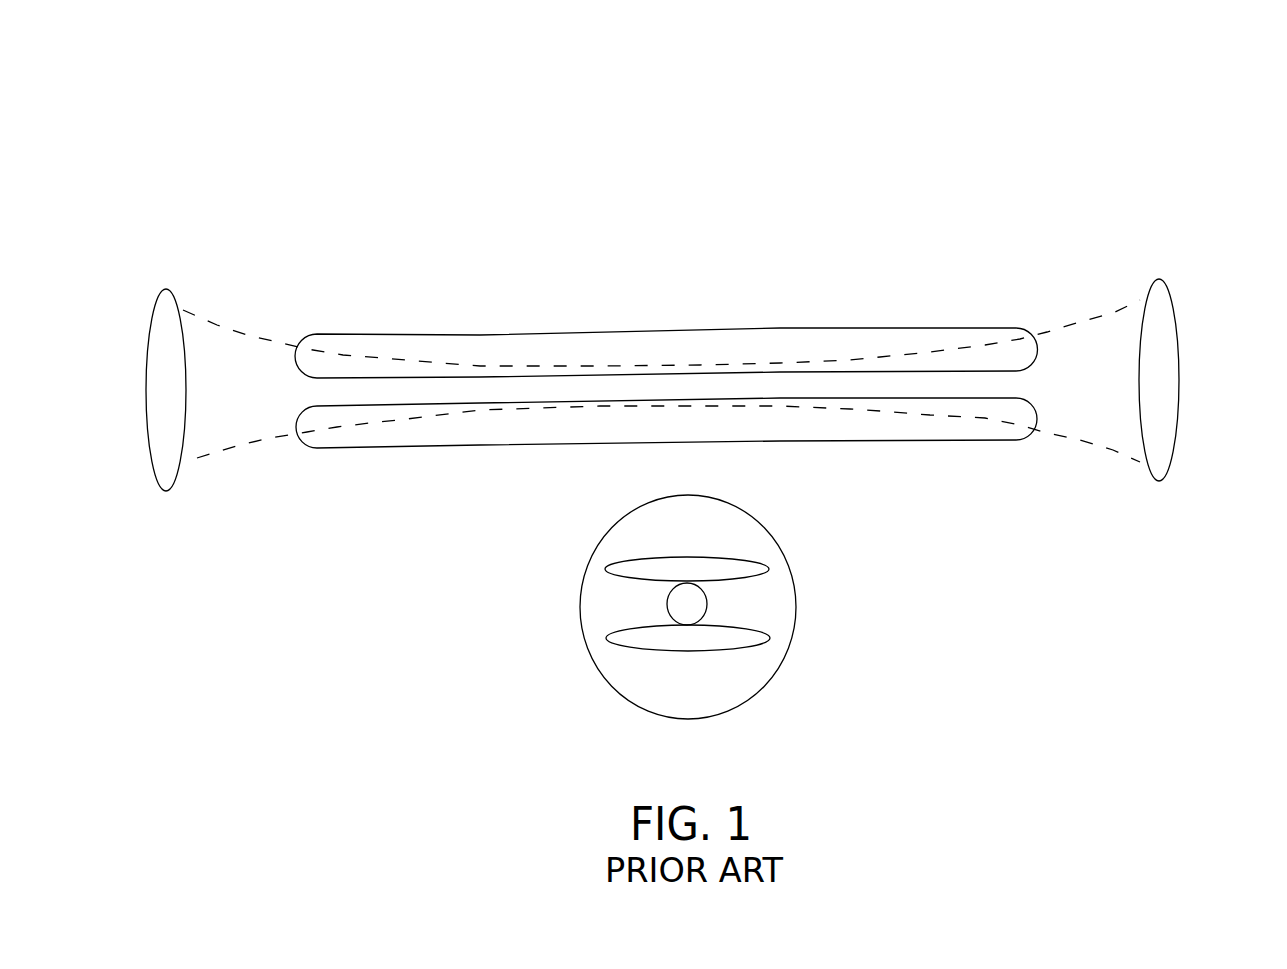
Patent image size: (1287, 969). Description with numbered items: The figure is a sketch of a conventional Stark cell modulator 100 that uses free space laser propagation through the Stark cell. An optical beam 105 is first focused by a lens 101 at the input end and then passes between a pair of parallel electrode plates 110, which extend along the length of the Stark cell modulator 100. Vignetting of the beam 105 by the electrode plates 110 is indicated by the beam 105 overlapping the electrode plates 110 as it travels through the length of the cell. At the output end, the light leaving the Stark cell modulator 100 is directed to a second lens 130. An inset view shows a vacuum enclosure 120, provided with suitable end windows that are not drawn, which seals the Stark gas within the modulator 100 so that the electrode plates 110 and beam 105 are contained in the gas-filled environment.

The Stark cell modulator 100 is at (215, 86).
The lens 101 is at (165, 490).
The optical beam 105 is at (227, 340).
The electrode plate 110 is at (513, 343).
The vacuum enclosure 120 is at (793, 632).
The second lens 130 is at (1180, 352).